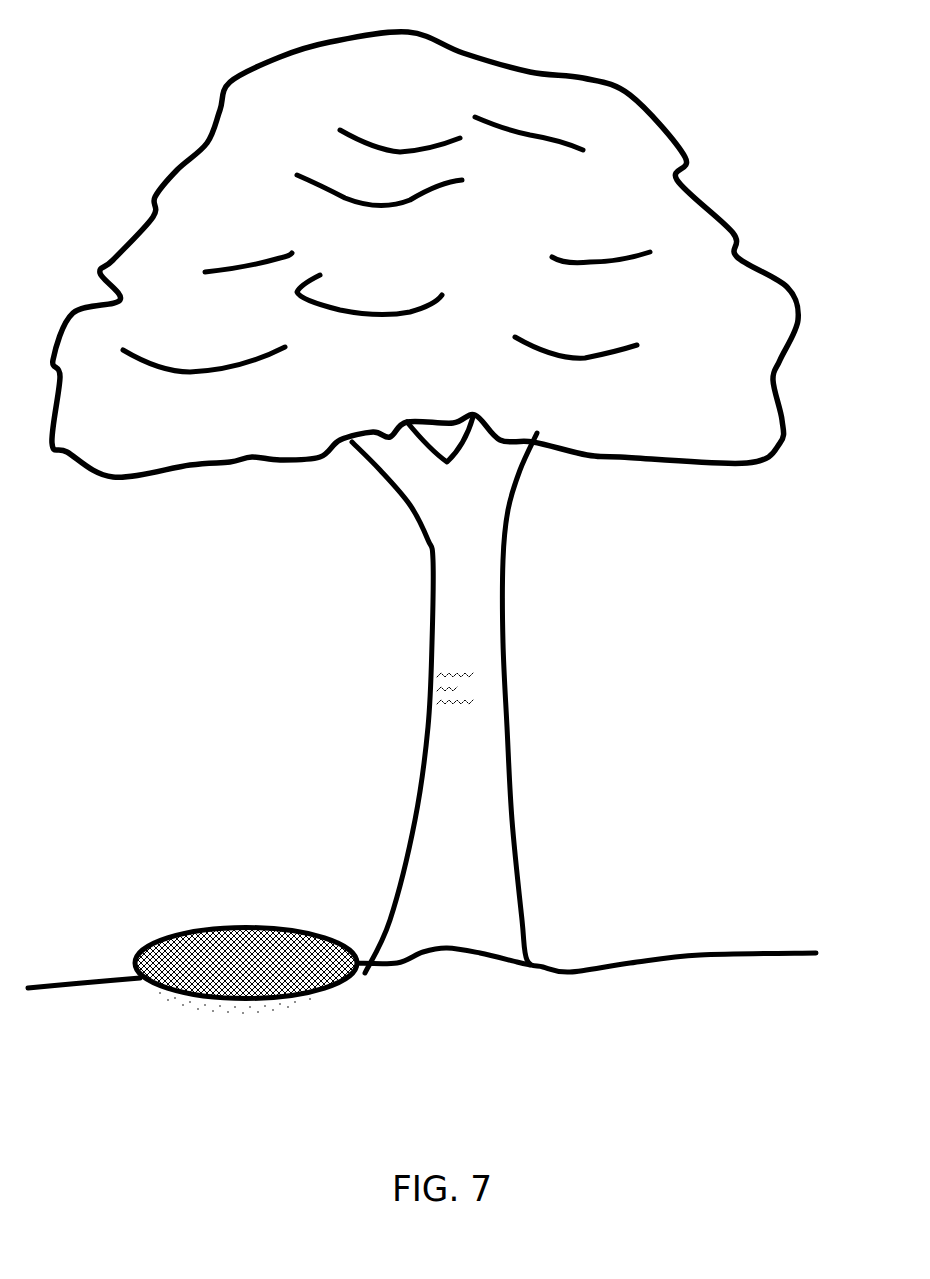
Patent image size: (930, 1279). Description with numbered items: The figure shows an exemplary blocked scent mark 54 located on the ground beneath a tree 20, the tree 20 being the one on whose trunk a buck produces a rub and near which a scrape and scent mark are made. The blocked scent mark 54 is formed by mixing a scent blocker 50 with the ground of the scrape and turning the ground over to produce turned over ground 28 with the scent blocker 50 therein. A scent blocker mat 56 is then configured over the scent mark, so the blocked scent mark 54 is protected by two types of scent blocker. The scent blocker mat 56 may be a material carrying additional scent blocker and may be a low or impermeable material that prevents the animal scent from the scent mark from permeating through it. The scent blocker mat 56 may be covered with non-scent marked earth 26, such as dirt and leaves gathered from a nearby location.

The tree 20 is at (293, 110).
The non-scent marked earth 26 is at (148, 940).
The turned over ground 28 is at (195, 1000).
The scent blocker 50 is at (230, 925).
The blocked scent mark 54 is at (340, 983).
The scent blocker mat 56 is at (282, 935).